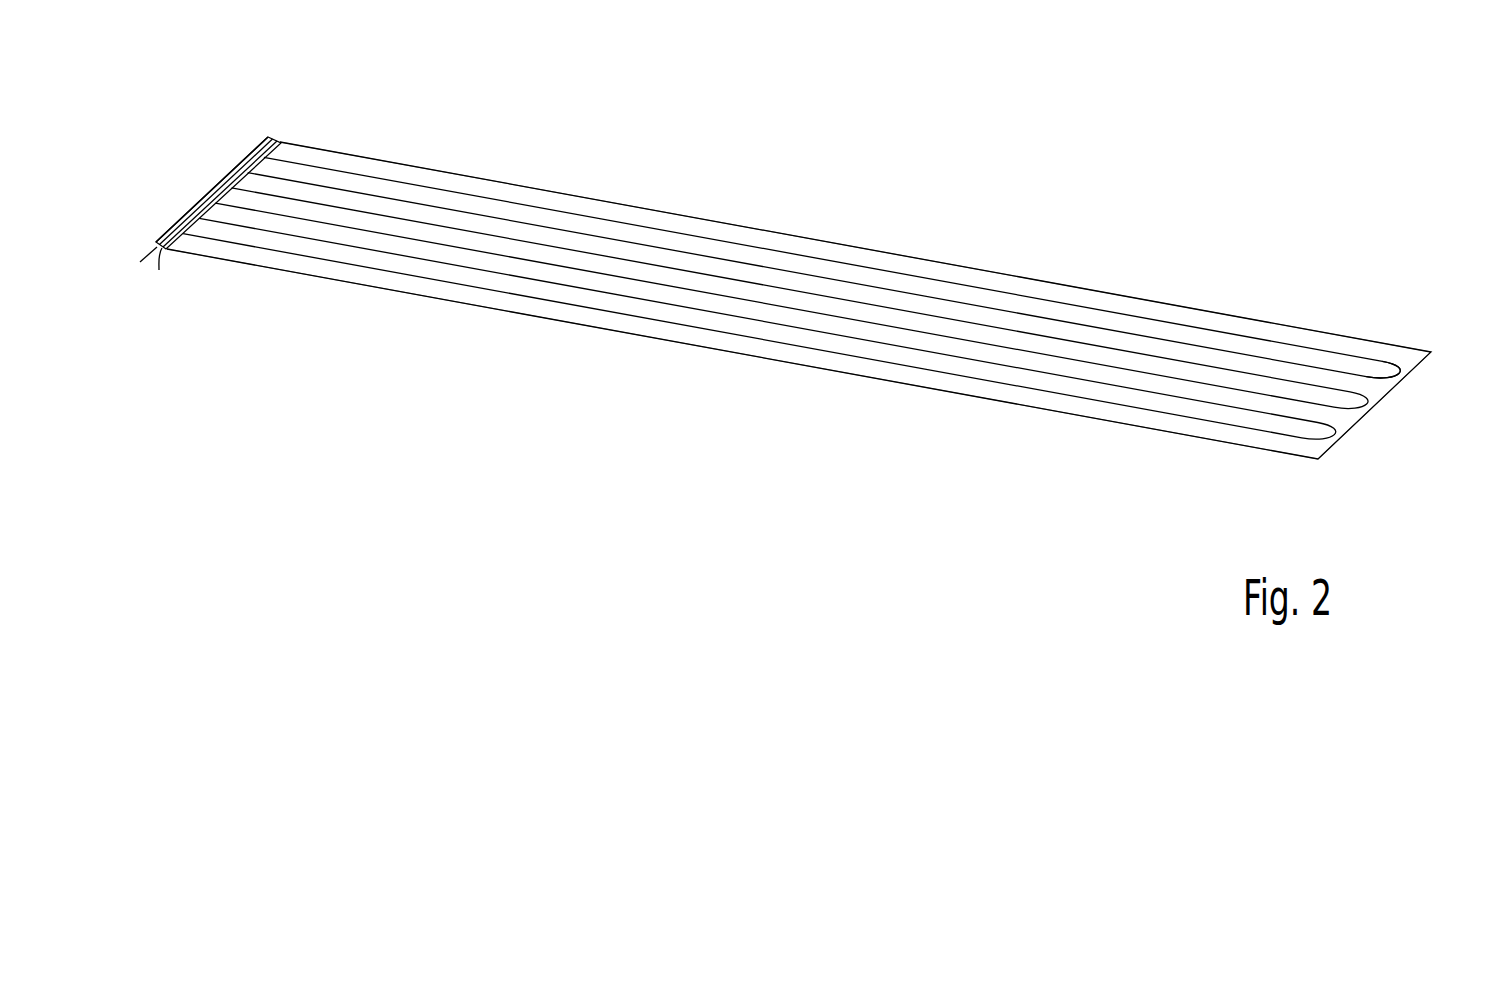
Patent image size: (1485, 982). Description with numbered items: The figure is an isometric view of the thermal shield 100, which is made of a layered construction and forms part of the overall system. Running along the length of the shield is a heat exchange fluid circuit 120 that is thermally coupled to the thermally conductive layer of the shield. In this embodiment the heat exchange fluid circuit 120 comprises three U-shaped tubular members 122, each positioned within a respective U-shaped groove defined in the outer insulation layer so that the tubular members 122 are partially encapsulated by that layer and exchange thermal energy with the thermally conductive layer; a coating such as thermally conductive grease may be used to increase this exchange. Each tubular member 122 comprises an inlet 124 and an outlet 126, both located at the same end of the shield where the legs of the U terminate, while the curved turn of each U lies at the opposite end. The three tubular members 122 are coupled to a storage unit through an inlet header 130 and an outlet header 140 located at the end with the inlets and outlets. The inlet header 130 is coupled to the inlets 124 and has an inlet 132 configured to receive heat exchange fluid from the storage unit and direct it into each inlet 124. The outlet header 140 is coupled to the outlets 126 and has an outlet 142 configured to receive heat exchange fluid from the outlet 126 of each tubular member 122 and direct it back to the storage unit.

The thermal shield 100 is at (1328, 98).
The heat exchange fluid circuit 120 is at (1217, 318).
The U-shaped tubular member 122 is at (1373, 360).
The inlet 124 is at (279, 149).
The outlet 126 is at (250, 175).
The inlet header 130 is at (279, 140).
The inlet 132 is at (159, 277).
The outlet header 140 is at (273, 135).
The outlet 142 is at (127, 272).